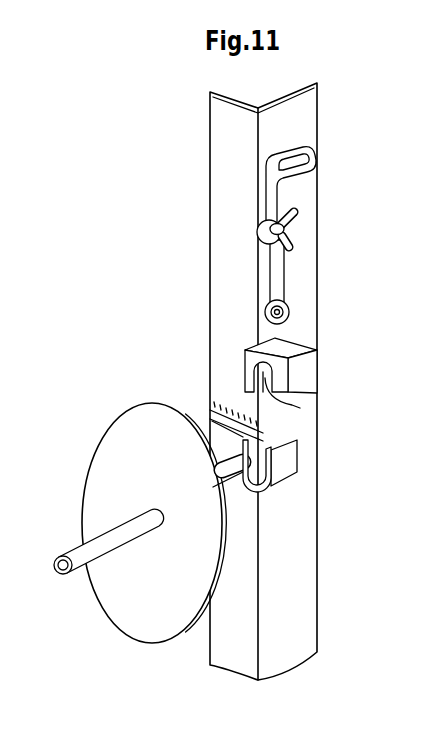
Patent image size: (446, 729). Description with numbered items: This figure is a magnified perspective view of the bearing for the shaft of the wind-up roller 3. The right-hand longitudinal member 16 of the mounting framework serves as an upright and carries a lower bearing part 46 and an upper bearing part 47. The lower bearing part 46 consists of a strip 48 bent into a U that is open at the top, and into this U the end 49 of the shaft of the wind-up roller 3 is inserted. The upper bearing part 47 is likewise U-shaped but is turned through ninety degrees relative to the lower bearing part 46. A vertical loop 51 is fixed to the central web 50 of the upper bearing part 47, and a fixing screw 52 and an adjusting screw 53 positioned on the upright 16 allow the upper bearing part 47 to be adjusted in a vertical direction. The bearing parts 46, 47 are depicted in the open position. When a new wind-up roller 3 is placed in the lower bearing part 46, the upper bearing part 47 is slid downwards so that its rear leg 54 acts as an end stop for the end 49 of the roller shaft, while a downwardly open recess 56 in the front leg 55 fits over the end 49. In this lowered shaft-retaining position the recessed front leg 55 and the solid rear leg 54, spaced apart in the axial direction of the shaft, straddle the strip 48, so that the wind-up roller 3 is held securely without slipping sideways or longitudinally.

The wind-up roller 3 is at (153, 632).
The right-hand longitudinal member 16 is at (300, 563).
The lower bearing part 46 is at (295, 486).
The upper bearing part 47 is at (275, 354).
The strip bent into a U 48 is at (260, 482).
The end of the shaft 49 is at (82, 548).
The central web 50 is at (290, 346).
The vertical loop 51 is at (286, 278).
The fixing screw 52 is at (264, 312).
The adjusting screw 53 is at (258, 232).
The rear leg 54 is at (318, 386).
The front leg 55 is at (244, 364).
The downwardly open recess 56 is at (300, 408).